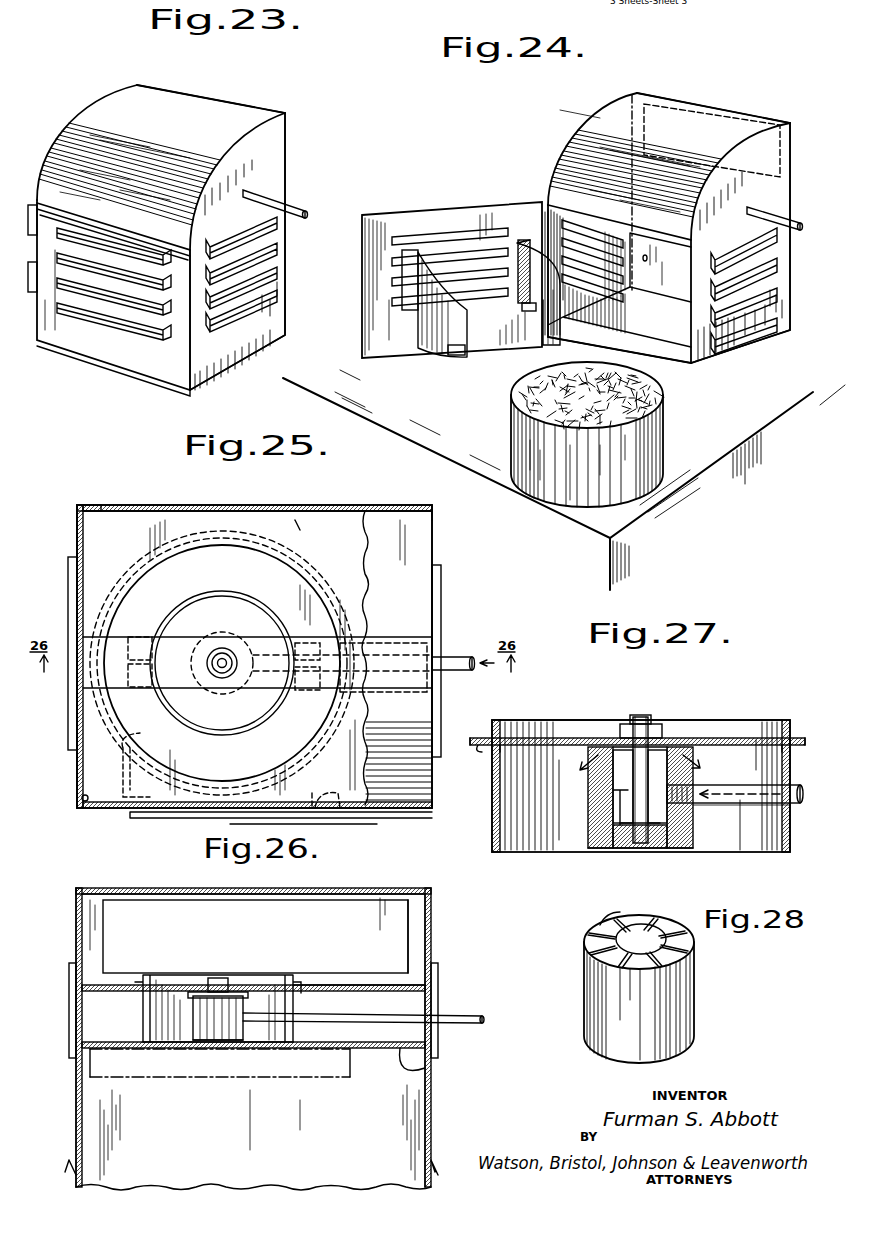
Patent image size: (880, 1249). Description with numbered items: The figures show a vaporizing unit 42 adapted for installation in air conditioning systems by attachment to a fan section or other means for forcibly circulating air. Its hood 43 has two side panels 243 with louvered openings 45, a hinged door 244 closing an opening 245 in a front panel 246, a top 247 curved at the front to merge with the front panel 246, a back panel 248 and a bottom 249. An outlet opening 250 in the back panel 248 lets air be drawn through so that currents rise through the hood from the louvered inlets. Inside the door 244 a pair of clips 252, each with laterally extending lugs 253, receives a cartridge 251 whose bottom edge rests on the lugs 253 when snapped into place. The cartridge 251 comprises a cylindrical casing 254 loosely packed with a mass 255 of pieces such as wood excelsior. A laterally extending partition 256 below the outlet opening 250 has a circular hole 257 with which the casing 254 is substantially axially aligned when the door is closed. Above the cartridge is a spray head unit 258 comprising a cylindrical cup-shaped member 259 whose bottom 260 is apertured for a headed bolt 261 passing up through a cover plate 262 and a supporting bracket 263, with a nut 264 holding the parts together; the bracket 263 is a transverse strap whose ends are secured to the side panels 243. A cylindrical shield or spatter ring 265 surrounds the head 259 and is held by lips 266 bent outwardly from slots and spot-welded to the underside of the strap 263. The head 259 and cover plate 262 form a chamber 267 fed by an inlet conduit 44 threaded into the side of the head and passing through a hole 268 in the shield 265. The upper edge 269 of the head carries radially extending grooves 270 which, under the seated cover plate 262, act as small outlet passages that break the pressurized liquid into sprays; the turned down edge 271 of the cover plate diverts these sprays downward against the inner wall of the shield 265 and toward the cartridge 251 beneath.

In FIG. 23, the vaporizing unit 42 is at (298, 168).
In FIG. 24, the vaporizing unit 42 is at (593, 104).
In FIG. 25, the vaporizing unit 42 is at (447, 550).
In FIG. 26, the vaporizing unit 42 is at (444, 911).
In FIG. 23, the hood 43 is at (280, 303).
In FIG. 25, the hood 43 is at (385, 512).
In FIG. 26, the hood 43 is at (362, 888).
In FIG. 23, the inlet conduit 44 is at (299, 202).
In FIG. 24, the inlet conduit 44 is at (796, 220).
In FIG. 25, the inlet conduit 44 is at (452, 662).
In FIG. 26, the inlet conduit 44 is at (463, 1013).
In FIG. 27, the inlet conduit 44 is at (733, 788).
In FIG. 23, the louvered openings 45 is at (277, 267).
In FIG. 24, the louvered openings 45 is at (773, 283).
In FIG. 25, the louvered openings 45 is at (70, 726).
In FIG. 26, the louvered openings 45 is at (69, 1163).
In FIG. 23, the side panels 243 is at (274, 145).
In FIG. 24, the side panels 243 is at (752, 350).
In FIG. 25, the side panels 243 is at (75, 535).
In FIG. 26, the side panels 243 is at (74, 928).
In FIG. 23, the hinged door 244 is at (92, 338).
In FIG. 24, the hinged door 244 is at (399, 223).
In FIG. 25, the hinged door 244 is at (412, 823).
In FIG. 24, the opening 245 is at (672, 357).
In FIG. 25, the opening 245 is at (125, 803).
In FIG. 24, the front panel 246 is at (565, 176).
In FIG. 23, the top 247 is at (200, 117).
In FIG. 24, the top 247 is at (613, 113).
In FIG. 25, the top 247 is at (408, 596).
In FIG. 26, the top 247 is at (108, 888).
In FIG. 24, the back panel 248 is at (680, 285).
In FIG. 25, the back panel 248 is at (88, 505).
In FIG. 26, the back panel 248 is at (420, 930).
In FIG. 24, the bottom 249 is at (657, 330).
In FIG. 24, the outlet opening 250 is at (713, 125).
In FIG. 25, the outlet opening 250 is at (150, 505).
In FIG. 26, the outlet opening 250 is at (160, 905).
In FIG. 24, the cartridge 251 is at (673, 457).
In FIG. 25, the cartridge 251 is at (230, 525).
In FIG. 26, the cartridge 251 is at (317, 1085).
In FIG. 24, the clips 252 is at (516, 242).
In FIG. 25, the clips 252 is at (123, 784).
In FIG. 24, the lugs 253 is at (523, 308).
In FIG. 24, the cylindrical casing 254 is at (603, 465).
In FIG. 24, the mass 255 is at (515, 403).
In FIG. 25, the partition 256 is at (333, 528).
In FIG. 26, the partition 256 is at (428, 1070).
In FIG. 25, the circular hole 257 is at (313, 582).
In FIG. 26, the circular hole 257 is at (337, 1042).
In FIG. 25, the spray head unit 258 is at (241, 586).
In FIG. 26, the spray head unit 258 is at (304, 984).
In FIG. 27, the spray head unit 258 is at (696, 722).
In FIG. 26, the cup-shaped member 259 is at (212, 1035).
In FIG. 27, the cup-shaped member 259 is at (698, 846).
In FIG. 28, the cup-shaped member 259 is at (694, 1013).
In FIG. 27, the bottom 260 is at (598, 852).
In FIG. 26, the headed bolt 261 is at (233, 988).
In FIG. 27, the headed bolt 261 is at (643, 843).
In FIG. 25, the cover plate 262 is at (223, 640).
In FIG. 26, the cover plate 262 is at (202, 980).
In FIG. 27, the cover plate 262 is at (684, 746).
In FIG. 25, the supporting bracket 263 is at (367, 705).
In FIG. 26, the supporting bracket 263 is at (370, 977).
In FIG. 27, the supporting bracket 263 is at (549, 736).
In FIG. 26, the nut 264 is at (223, 985).
In FIG. 27, the nut 264 is at (651, 718).
In FIG. 25, the shield 265 is at (295, 635).
In FIG. 26, the shield 265 is at (138, 977).
In FIG. 27, the shield 265 is at (493, 797).
In FIG. 25, the lips 266 is at (134, 637).
In FIG. 26, the lips 266 is at (140, 996).
In FIG. 27, the lips 266 is at (502, 722).
In FIG. 27, the chamber 267 is at (617, 792).
In FIG. 28, the chamber 267 is at (650, 932).
In FIG. 27, the hole 268 is at (772, 808).
In FIG. 28, the upper edge 269 is at (607, 924).
In FIG. 27, the grooves 270 is at (594, 748).
In FIG. 28, the grooves 270 is at (643, 925).
In FIG. 27, the turned down edge 271 is at (576, 745).